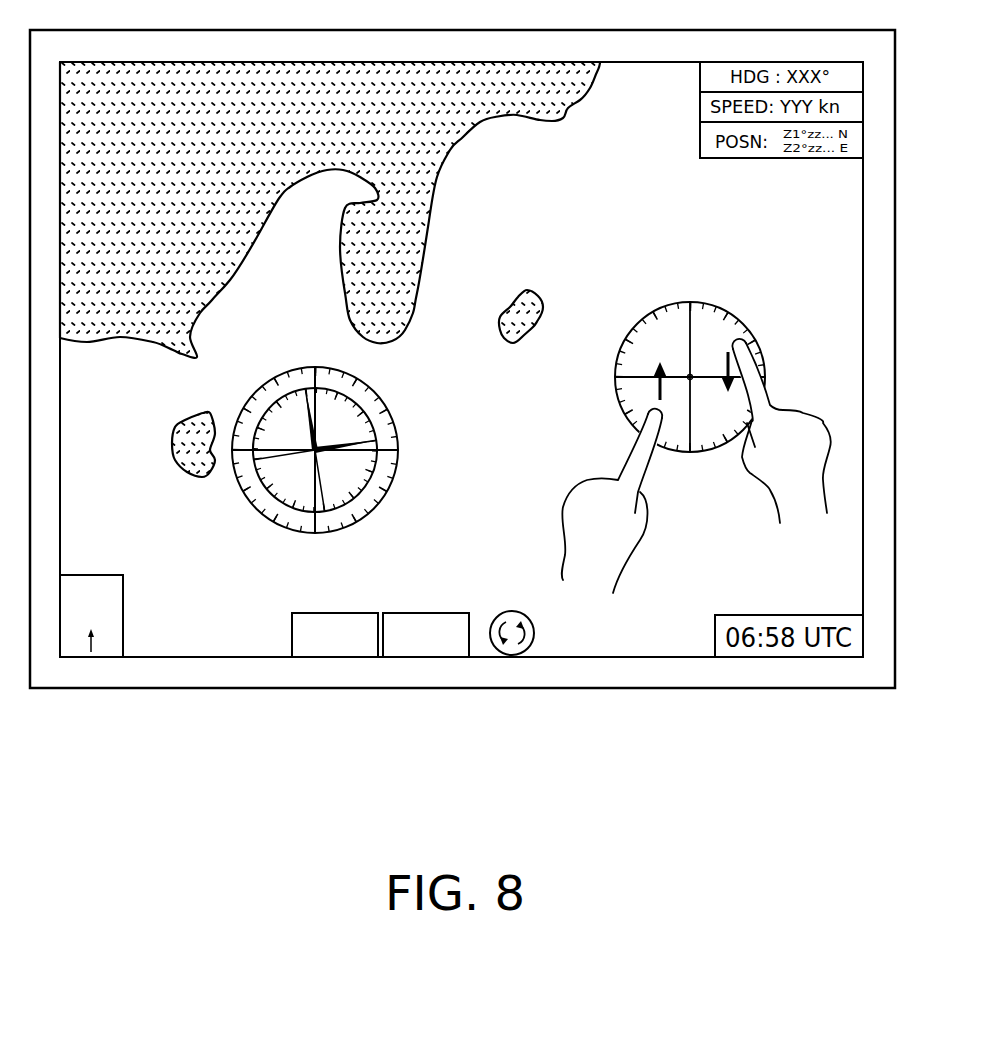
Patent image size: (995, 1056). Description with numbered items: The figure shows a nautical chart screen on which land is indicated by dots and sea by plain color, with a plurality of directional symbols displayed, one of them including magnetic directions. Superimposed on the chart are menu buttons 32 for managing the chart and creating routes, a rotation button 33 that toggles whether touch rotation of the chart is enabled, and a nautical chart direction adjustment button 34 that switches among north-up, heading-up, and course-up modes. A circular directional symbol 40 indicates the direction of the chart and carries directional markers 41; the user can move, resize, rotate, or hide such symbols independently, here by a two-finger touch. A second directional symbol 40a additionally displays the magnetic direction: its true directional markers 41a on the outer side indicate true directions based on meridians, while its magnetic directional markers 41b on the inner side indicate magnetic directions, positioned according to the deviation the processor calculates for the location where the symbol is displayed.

The menu buttons 32 is at (357, 650).
The rotation button 33 is at (512, 653).
The nautical chart direction adjustment button 34 is at (75, 648).
The directional symbol 40 is at (697, 304).
The directional symbol 40a is at (362, 567).
The directional markers 41 is at (747, 320).
The true directional markers 41a is at (393, 479).
The magnetic directional markers 41b is at (393, 414).